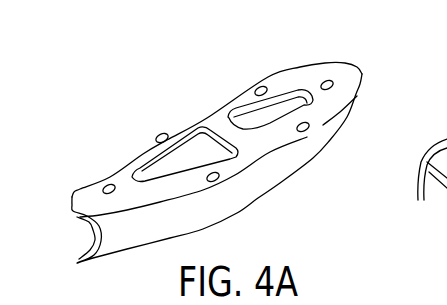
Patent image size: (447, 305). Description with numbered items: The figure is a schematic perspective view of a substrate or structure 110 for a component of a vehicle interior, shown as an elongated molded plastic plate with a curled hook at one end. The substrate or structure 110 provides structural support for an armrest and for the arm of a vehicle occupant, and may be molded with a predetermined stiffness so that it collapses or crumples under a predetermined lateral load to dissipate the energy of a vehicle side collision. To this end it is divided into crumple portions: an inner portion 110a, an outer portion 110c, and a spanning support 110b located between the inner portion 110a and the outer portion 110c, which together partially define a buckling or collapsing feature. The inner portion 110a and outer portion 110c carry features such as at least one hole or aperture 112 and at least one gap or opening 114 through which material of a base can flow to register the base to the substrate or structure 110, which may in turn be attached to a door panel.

The substrate or structure 110 is at (181, 122).
The inner portion 110a is at (208, 115).
The spanning support 110b is at (240, 138).
The outer portion 110c is at (280, 142).
The hole or aperture 112 is at (158, 133).
The gap or opening 114 is at (172, 120).